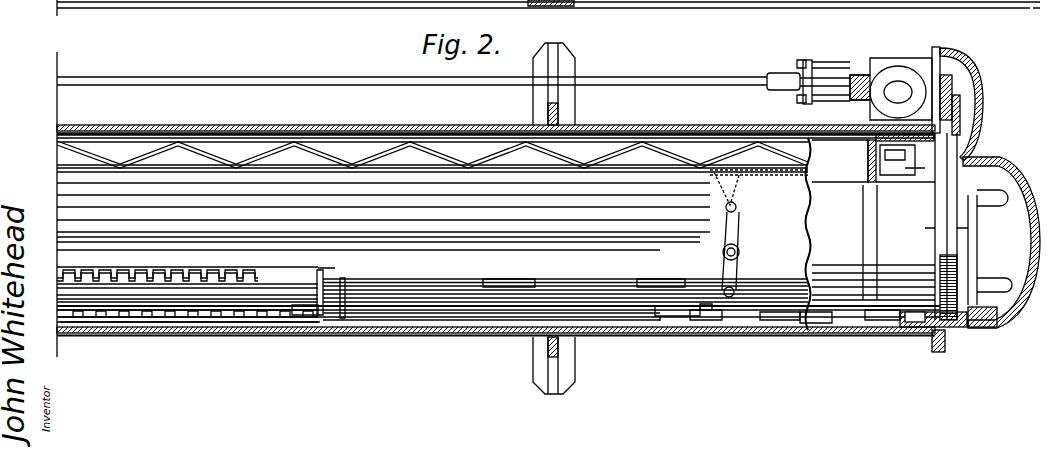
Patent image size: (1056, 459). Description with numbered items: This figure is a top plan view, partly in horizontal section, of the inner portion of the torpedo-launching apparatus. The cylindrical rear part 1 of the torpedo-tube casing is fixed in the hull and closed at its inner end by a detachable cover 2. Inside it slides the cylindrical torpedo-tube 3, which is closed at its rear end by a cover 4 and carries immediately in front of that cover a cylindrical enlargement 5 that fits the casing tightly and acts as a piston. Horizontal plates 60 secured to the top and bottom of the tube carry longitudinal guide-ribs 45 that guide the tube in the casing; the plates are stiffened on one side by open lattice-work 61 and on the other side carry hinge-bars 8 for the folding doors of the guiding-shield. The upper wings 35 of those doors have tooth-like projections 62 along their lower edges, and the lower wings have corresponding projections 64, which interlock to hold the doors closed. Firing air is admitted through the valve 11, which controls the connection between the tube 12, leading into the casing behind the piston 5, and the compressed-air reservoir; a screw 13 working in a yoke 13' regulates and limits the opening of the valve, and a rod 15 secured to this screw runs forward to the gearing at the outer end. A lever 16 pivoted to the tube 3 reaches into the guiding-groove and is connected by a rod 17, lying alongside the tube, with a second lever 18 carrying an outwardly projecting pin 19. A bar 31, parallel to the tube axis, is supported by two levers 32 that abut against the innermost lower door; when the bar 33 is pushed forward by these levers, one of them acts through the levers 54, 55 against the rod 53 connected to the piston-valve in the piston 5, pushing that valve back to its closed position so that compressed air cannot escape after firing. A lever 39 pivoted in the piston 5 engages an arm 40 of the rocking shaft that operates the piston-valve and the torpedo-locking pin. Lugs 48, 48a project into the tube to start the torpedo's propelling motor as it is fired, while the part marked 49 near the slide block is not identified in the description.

The rear part of torpedo-tube casing 1 is at (210, 127).
The detachable cover 2 is at (1001, 242).
The torpedo-tube 3 is at (873, 242).
The cover 4 is at (968, 238).
The cylindrical enlargement 5 is at (888, 310).
The hinge-bars 8 is at (186, 274).
The valve 11 is at (891, 76).
The tube 12 is at (955, 80).
The screw 13 is at (838, 67).
The yoke 13' is at (808, 68).
The rod 15 is at (289, 74).
The lever 16 is at (342, 318).
The rod 17 is at (437, 312).
The lever 18 is at (700, 320).
The pin 19 is at (660, 316).
The bar 31 is at (822, 322).
The levers 32 is at (778, 321).
The bar 33 is at (510, 318).
The upper wings of folding doors 35 is at (190, 300).
The lever 39 is at (958, 116).
The arm of rocking shaft 40 is at (890, 152).
The guide-ribs 45 is at (130, 200).
The lug 48 is at (651, 280).
The lug 48a is at (510, 280).
The stop block 49 is at (314, 316).
The rod 53 is at (828, 180).
The lever 54 is at (742, 226).
The lever 55 is at (736, 200).
The horizontal plates 60 is at (565, 278).
The open lattice-work 61 is at (364, 161).
The tooth-like projections 62 is at (113, 320).
The tooth-like projections 64 is at (272, 318).